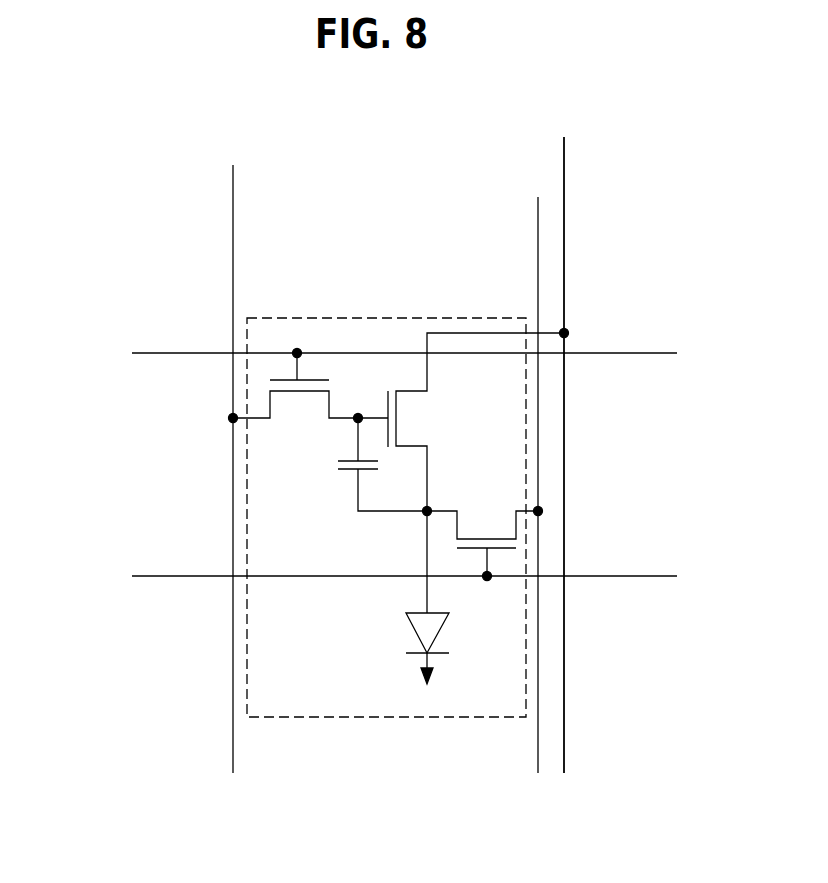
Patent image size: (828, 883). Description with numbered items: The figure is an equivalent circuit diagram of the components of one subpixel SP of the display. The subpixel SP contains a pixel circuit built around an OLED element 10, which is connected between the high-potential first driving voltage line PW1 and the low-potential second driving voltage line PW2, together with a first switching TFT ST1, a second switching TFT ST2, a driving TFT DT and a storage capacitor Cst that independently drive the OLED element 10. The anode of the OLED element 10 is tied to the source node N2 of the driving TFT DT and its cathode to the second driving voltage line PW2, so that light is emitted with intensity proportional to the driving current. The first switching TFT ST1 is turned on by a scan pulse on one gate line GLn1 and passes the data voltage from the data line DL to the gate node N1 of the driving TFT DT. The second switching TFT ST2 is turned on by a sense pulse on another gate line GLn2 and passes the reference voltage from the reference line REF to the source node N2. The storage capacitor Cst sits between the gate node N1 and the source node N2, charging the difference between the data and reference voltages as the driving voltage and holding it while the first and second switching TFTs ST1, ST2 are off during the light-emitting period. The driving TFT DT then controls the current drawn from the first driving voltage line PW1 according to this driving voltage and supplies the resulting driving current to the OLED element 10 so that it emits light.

The OLED element 10 is at (410, 623).
The subpixel SP is at (387, 318).
The first switching TFT ST1 is at (309, 386).
The second switching TFT ST2 is at (485, 544).
The driving TFT DT is at (478, 420).
The storage capacitor Cst is at (366, 464).
The gate node N1 is at (357, 408).
The source node N2 is at (443, 501).
The data line DL is at (239, 457).
The reference line REF is at (526, 469).
The EVDD line PW1 is at (576, 442).
The EVSS line PW2 is at (430, 663).
The gate line GLn1 is at (374, 344).
The gate line GLn2 is at (371, 567).